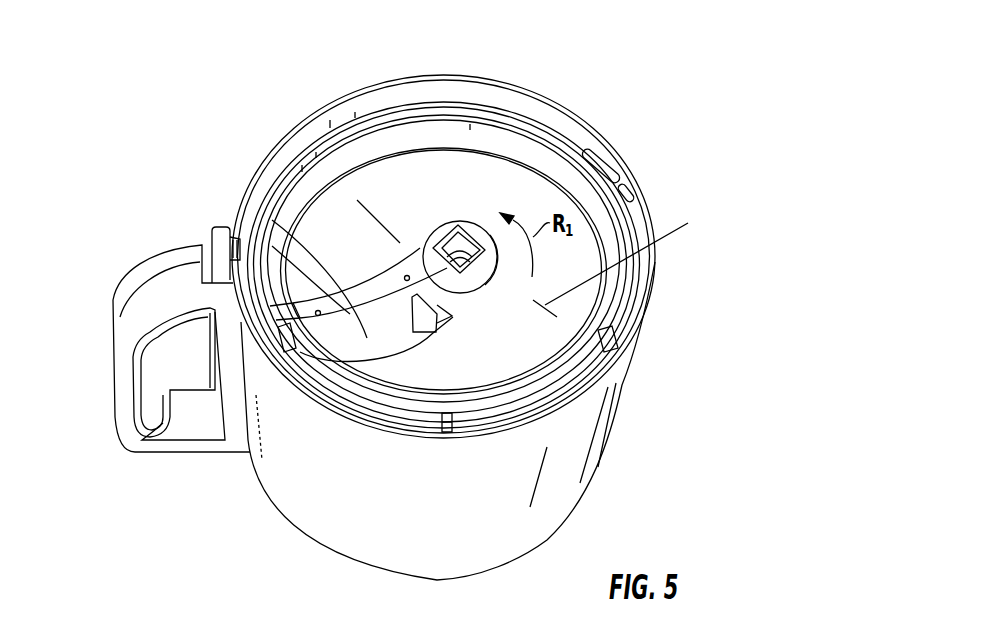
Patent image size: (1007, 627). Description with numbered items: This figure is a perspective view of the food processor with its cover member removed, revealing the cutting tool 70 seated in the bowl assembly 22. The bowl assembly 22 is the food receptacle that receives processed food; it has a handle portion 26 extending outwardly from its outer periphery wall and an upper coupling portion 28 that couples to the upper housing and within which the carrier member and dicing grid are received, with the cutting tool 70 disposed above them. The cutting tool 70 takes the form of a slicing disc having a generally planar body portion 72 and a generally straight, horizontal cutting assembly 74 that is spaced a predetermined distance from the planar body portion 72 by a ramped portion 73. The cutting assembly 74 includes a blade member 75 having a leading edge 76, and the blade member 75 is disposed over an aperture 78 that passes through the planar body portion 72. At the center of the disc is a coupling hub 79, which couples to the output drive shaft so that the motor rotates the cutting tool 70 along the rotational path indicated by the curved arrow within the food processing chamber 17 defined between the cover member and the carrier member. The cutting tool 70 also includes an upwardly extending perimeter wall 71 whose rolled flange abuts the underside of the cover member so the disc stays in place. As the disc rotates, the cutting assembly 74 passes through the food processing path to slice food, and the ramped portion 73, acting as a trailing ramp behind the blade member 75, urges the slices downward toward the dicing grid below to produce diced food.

The food processing chamber 17 is at (627, 259).
The bowl assembly 22 is at (633, 385).
The handle portion 26 is at (115, 301).
The upper coupling portion 28 is at (622, 181).
The cutting tool 70 is at (521, 185).
The perimeter wall 71 is at (327, 132).
The planar body portion 72 is at (485, 195).
The ramped portion 73 is at (417, 248).
The cutting assembly 74 is at (367, 286).
The blade member 75 is at (288, 302).
The leading edge 76 is at (393, 280).
The aperture 78 is at (211, 228).
The coupling hub 79 is at (447, 228).